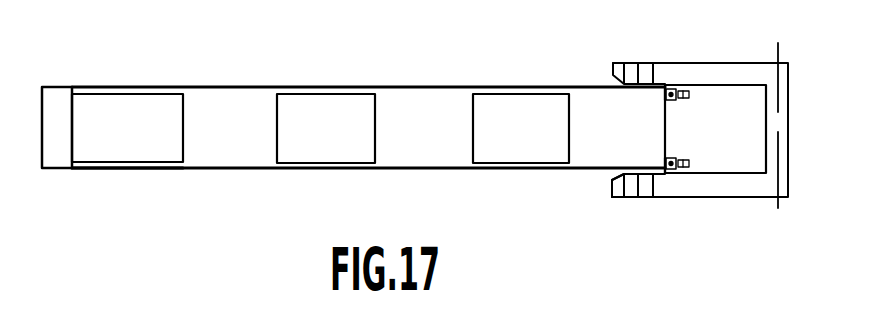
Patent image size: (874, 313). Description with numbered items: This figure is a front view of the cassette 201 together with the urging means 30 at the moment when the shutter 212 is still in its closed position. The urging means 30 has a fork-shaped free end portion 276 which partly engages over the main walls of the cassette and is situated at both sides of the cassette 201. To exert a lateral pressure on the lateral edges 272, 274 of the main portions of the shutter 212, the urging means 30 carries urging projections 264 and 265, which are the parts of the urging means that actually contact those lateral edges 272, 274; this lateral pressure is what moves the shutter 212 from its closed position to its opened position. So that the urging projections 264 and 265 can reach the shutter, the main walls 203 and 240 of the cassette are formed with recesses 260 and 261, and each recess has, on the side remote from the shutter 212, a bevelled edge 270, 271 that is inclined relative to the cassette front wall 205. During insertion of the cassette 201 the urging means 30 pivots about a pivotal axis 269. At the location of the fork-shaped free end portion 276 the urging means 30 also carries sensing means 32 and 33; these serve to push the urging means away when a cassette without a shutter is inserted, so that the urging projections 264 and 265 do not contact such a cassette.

The cassette 201 is at (58, 86).
The main wall 203 is at (127, 88).
The shutter 212 is at (423, 110).
The main wall 240 is at (128, 168).
The urging means 30 is at (721, 63).
The sensing means 32 is at (636, 64).
The sensing means 33 is at (630, 198).
The cassette front wall 205 is at (757, 130).
The recess 260 is at (688, 129).
The recess 261 is at (679, 157).
The urging projection 264 is at (670, 88).
The urging projection 265 is at (671, 170).
The pivotal axis 269 is at (778, 43).
The bevelled edge 270 is at (687, 98).
The bevelled edge 271 is at (702, 166).
The lateral edge 272 is at (666, 93).
The lateral edge 274 is at (664, 160).
The fork-shaped free end portion 276 is at (613, 197).